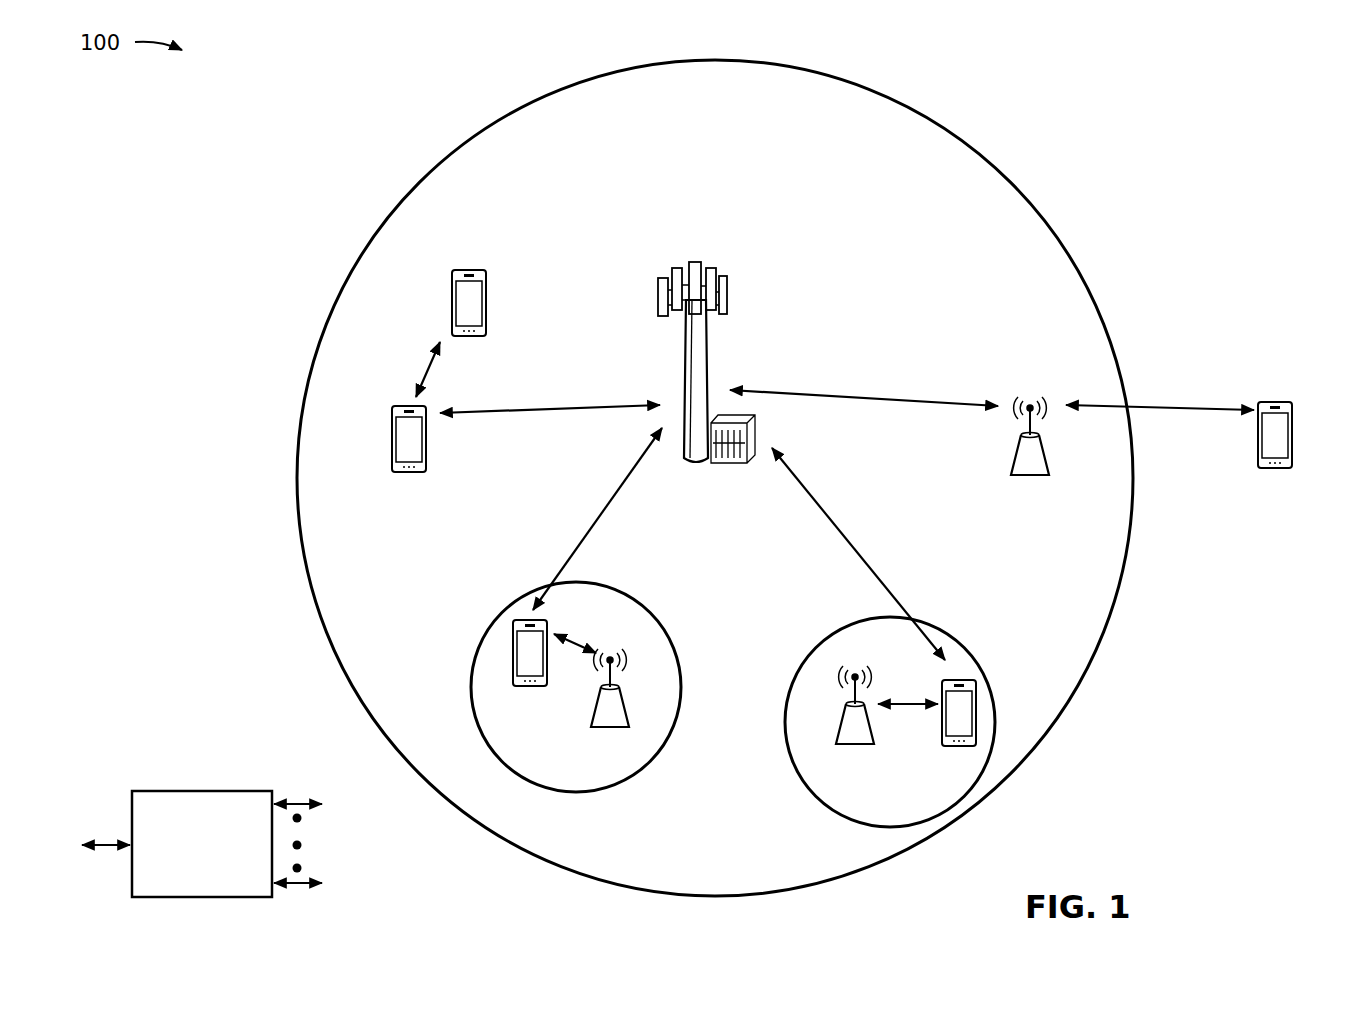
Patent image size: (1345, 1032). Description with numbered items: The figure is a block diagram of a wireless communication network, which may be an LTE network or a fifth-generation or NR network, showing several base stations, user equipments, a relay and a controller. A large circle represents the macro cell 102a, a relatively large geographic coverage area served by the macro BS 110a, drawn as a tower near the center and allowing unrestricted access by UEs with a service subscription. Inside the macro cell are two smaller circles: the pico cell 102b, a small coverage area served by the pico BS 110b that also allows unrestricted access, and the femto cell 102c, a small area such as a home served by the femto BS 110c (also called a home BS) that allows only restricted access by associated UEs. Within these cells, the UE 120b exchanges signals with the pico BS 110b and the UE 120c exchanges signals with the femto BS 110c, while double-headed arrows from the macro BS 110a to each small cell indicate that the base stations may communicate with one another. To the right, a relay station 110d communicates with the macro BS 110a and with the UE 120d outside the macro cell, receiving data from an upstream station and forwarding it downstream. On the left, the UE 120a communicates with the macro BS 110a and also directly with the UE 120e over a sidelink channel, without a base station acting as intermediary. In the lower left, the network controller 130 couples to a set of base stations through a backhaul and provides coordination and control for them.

The macro cell 102a is at (993, 162).
The pico cell 102b is at (667, 625).
The femto cell 102c is at (824, 640).
The macro BS 110a is at (702, 258).
The pico BS 110b is at (630, 716).
The femto BS 110c is at (838, 732).
The relay station 110d is at (1030, 400).
The UE 120a is at (392, 440).
The UE 120b is at (518, 688).
The UE 120c is at (948, 748).
The UE 120d is at (1290, 402).
The UE 120e is at (452, 292).
The network controller 130 is at (200, 790).